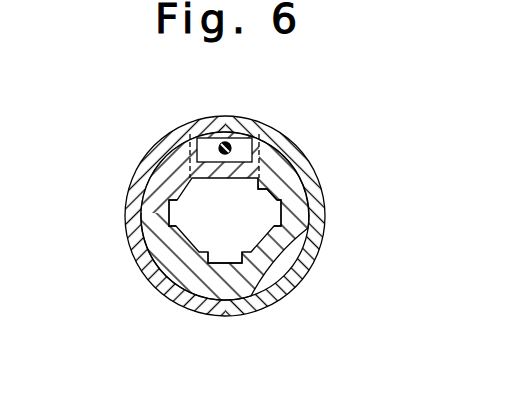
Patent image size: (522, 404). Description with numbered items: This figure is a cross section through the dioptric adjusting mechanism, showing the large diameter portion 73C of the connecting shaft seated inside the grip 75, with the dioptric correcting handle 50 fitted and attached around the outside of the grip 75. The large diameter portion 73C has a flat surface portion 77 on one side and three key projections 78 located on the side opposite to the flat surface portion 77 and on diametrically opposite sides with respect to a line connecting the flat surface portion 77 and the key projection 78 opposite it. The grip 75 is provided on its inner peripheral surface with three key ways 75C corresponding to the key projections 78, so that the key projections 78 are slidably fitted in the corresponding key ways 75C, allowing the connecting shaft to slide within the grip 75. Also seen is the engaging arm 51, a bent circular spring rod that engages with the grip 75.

The dioptric correcting handle 50 is at (308, 153).
The engaging arm 51 is at (198, 137).
The flat surface portion 77 is at (250, 138).
The key projections 78 is at (170, 206).
The grip 75 is at (158, 250).
The key ways 75C is at (281, 217).
The large diameter portion 73C is at (268, 190).